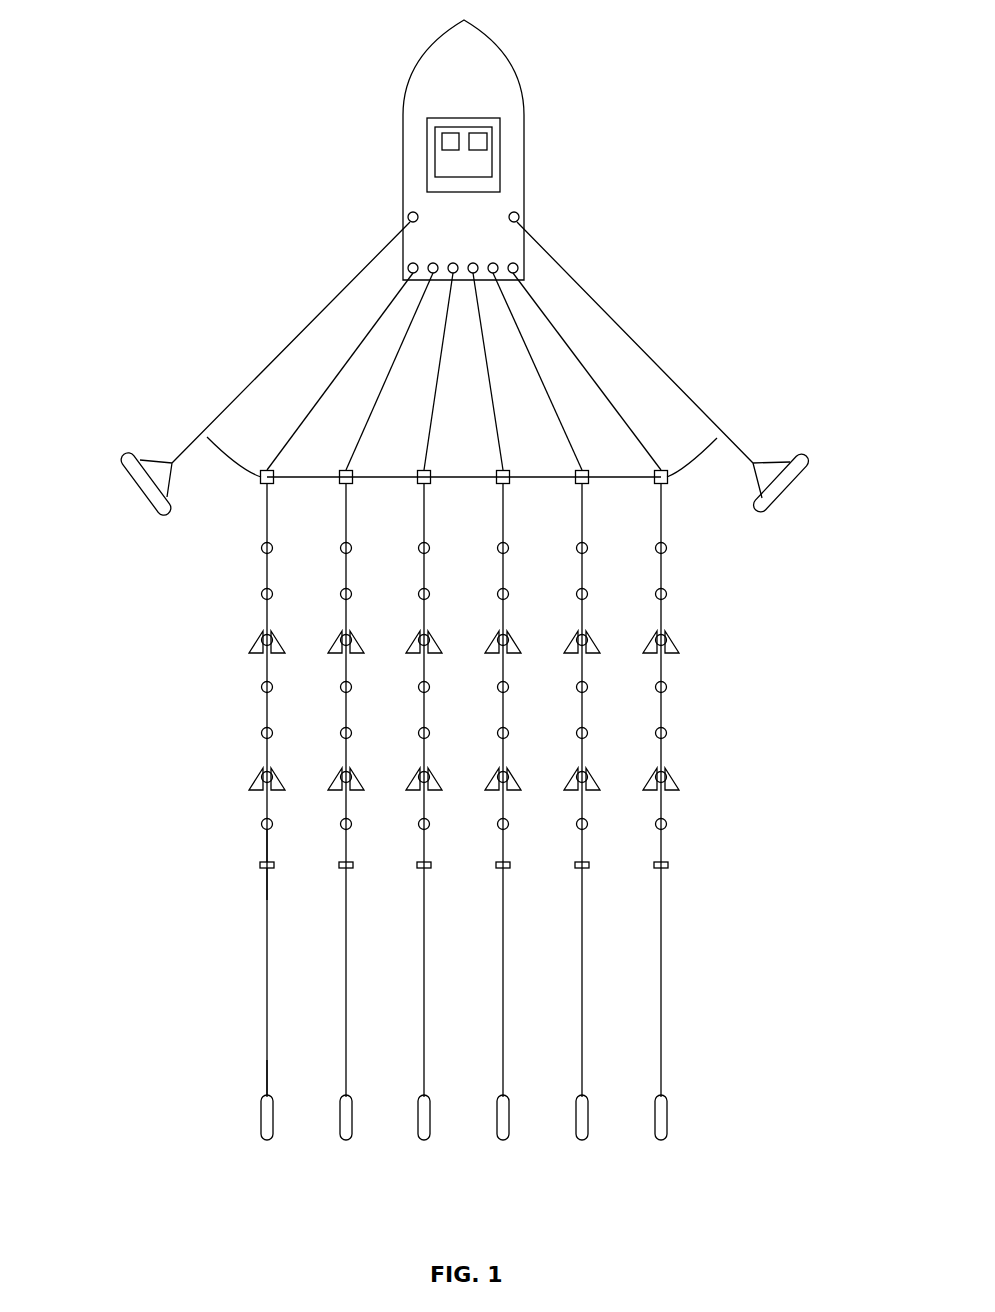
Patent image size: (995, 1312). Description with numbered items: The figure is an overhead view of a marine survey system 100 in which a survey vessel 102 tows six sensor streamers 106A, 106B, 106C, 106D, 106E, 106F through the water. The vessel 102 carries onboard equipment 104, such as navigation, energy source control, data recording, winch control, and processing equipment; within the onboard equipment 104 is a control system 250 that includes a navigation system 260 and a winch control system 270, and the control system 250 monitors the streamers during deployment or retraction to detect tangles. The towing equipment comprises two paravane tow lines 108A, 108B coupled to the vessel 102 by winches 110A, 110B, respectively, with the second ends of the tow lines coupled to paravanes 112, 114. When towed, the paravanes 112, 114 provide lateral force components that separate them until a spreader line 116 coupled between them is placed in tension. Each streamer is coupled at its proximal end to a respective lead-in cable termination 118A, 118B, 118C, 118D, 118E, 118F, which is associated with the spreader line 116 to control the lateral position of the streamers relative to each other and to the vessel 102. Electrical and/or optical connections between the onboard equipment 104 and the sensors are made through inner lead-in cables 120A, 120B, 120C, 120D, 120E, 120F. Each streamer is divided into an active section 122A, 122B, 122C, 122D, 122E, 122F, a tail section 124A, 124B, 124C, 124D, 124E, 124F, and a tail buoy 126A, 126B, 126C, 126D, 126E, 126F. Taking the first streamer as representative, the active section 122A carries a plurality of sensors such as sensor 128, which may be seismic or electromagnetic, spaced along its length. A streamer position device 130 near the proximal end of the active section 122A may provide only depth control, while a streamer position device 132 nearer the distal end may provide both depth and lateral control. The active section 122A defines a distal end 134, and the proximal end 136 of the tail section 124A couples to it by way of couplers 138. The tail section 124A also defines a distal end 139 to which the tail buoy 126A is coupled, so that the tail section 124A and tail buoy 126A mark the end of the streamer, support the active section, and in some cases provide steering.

The marine survey system 100 is at (190, 33).
The survey vessel 102 is at (423, 68).
The onboard equipment 104 is at (502, 125).
The control system 250 is at (435, 170).
The navigation system 260 is at (442, 142).
The winch control system 270 is at (487, 142).
The sensor streamer 106A is at (230, 852).
The sensor streamer 106B is at (322, 852).
The sensor streamer 106C is at (400, 852).
The sensor streamer 106D is at (530, 852).
The sensor streamer 106E is at (608, 852).
The sensor streamer 106F is at (695, 852).
The paravane tow line 108A is at (347, 291).
The paravane tow line 108B is at (583, 291).
The winch 110A is at (409, 213).
The winch 110B is at (519, 213).
The paravane 112 is at (135, 482).
The paravane 114 is at (790, 492).
The spreader line 116 is at (465, 483).
The lead-in cable termination 118A is at (262, 484).
The lead-in cable termination 118B is at (343, 485).
The lead-in cable termination 118C is at (421, 485).
The lead-in cable termination 118D is at (507, 485).
The lead-in cable termination 118E is at (586, 485).
The lead-in cable termination 118F is at (668, 484).
The inner lead-in cable 120A is at (362, 342).
The inner lead-in cable 120B is at (380, 393).
The inner lead-in cable 120C is at (428, 448).
The inner lead-in cable 120D is at (500, 448).
The inner lead-in cable 120E is at (547, 393).
The inner lead-in cable 120F is at (567, 342).
The active section 122A is at (265, 712).
The active section 122B is at (344, 707).
The active section 122C is at (422, 707).
The active section 122D is at (505, 707).
The active section 122E is at (584, 707).
The active section 122F is at (663, 707).
The tail section 124A is at (266, 970).
The tail section 124B is at (345, 970).
The tail section 124C is at (423, 970).
The tail section 124D is at (504, 970).
The tail section 124E is at (583, 970).
The tail section 124F is at (662, 970).
The tail buoy 126A is at (262, 1118).
The tail buoy 126B is at (341, 1118).
The tail buoy 126C is at (419, 1118).
The tail buoy 126D is at (509, 1118).
The tail buoy 126E is at (588, 1118).
The tail buoy 126F is at (667, 1118).
The sensor 128 is at (262, 549).
The streamer position device 130 is at (257, 642).
The streamer position device 132 is at (257, 778).
The distal end 134 is at (260, 844).
The proximal end 136 is at (260, 880).
The coupler 138 is at (259, 864).
The distal end 139 is at (260, 1084).